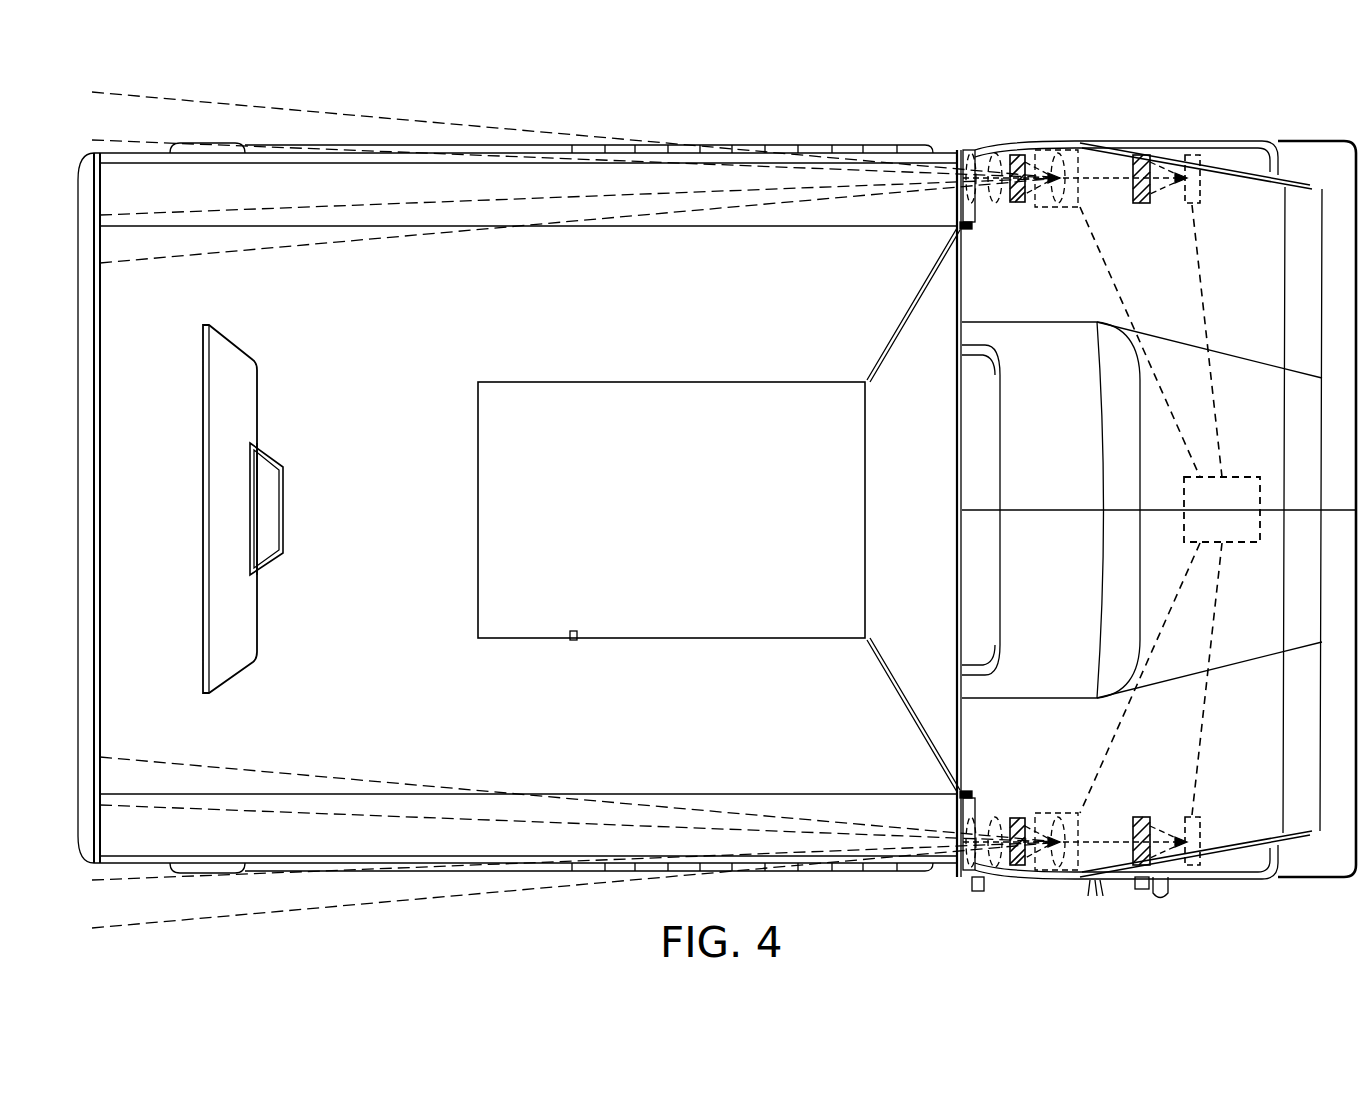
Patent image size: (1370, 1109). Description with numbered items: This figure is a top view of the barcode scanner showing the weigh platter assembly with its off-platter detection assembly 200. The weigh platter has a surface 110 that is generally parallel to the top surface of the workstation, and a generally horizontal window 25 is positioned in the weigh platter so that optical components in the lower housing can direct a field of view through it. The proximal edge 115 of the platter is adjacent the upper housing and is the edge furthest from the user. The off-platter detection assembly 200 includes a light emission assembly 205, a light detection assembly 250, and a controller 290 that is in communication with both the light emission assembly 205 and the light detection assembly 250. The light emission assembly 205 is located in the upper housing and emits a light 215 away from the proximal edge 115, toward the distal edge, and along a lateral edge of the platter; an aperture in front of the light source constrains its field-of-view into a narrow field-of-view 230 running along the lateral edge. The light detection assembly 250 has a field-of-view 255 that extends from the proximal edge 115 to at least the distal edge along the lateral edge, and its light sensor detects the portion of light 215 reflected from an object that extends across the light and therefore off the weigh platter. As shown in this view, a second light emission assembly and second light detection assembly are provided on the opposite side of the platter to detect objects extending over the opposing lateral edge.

The surface 110 is at (384, 295).
The horizontal window 25 is at (680, 408).
The proximal edge 115 is at (957, 215).
The off-platter detection assembly 200 is at (1050, 710).
The light emission assembly 205 is at (1018, 890).
The light 215 is at (613, 802).
The field-of-view 255 is at (720, 825).
The narrow field-of-view 230 is at (863, 822).
The light detection assembly 250 is at (1165, 808).
The controller 290 is at (1240, 477).